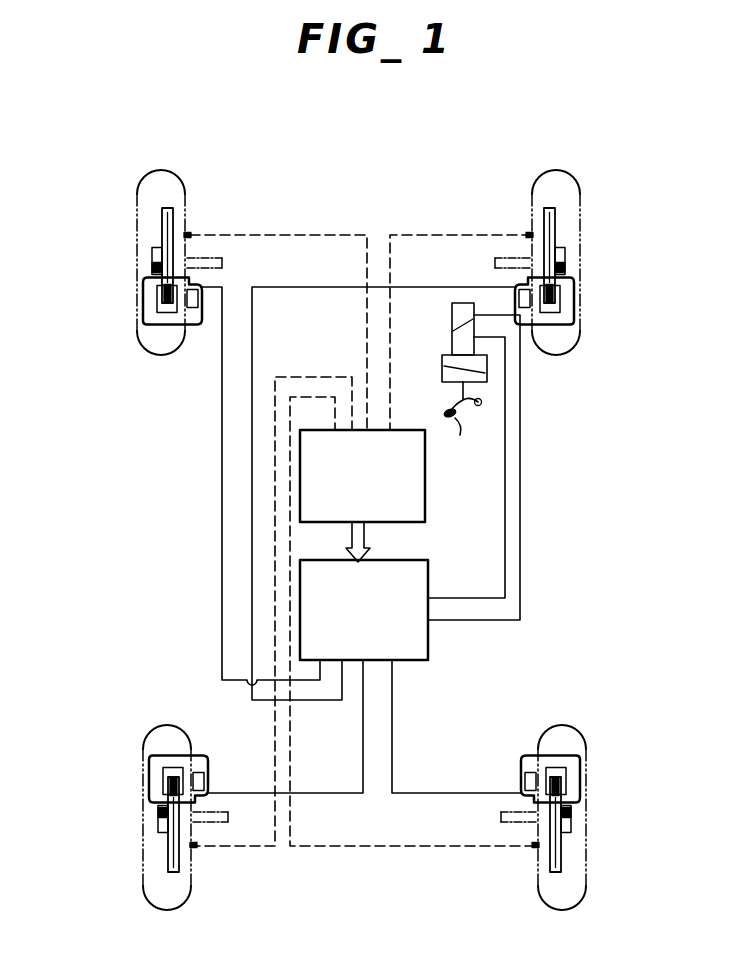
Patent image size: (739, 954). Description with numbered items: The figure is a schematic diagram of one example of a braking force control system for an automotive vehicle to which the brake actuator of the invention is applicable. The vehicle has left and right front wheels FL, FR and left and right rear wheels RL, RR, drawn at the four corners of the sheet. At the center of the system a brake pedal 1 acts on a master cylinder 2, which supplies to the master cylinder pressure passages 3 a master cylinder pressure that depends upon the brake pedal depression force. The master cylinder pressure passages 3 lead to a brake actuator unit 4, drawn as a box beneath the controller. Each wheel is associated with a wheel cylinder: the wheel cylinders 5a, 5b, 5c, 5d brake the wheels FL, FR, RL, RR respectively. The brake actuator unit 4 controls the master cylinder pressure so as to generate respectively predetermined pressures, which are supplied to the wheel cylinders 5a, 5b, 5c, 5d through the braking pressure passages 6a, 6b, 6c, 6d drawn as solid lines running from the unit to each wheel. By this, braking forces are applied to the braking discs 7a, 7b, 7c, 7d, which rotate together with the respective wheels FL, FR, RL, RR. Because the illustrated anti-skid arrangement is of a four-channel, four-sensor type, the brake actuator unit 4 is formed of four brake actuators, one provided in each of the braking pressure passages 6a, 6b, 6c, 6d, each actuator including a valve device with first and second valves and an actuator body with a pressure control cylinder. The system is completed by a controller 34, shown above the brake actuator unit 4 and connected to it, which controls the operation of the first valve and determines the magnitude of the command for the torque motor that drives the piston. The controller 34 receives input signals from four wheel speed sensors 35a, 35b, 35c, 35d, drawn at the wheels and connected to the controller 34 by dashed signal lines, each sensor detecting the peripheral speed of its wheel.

The brake pedal 1 is at (462, 420).
The master cylinder 2 is at (452, 313).
The master cylinder pressure passages 3 is at (537, 505).
The brake actuator unit 4 is at (428, 640).
The wheel cylinder 5a is at (150, 322).
The wheel cylinder 5b is at (577, 318).
The wheel cylinder 5c is at (165, 757).
The wheel cylinder 5d is at (575, 757).
The braking pressure passage 6a is at (222, 598).
The braking pressure passage 6b is at (325, 703).
The braking pressure passage 6c is at (330, 795).
The braking pressure passage 6d is at (422, 795).
The braking disc 7a is at (160, 240).
The braking disc 7b is at (558, 245).
The braking disc 7c is at (175, 850).
The braking disc 7d is at (563, 848).
The controller 34 is at (425, 475).
The wheel speed sensor 35a is at (189, 233).
The wheel speed sensor 35b is at (532, 234).
The wheel speed sensor 35c is at (193, 851).
The wheel speed sensor 35d is at (533, 851).
The left front wheel FL is at (137, 197).
The right front wheel FR is at (580, 190).
The left rear wheel RL is at (147, 900).
The right rear wheel RR is at (583, 893).